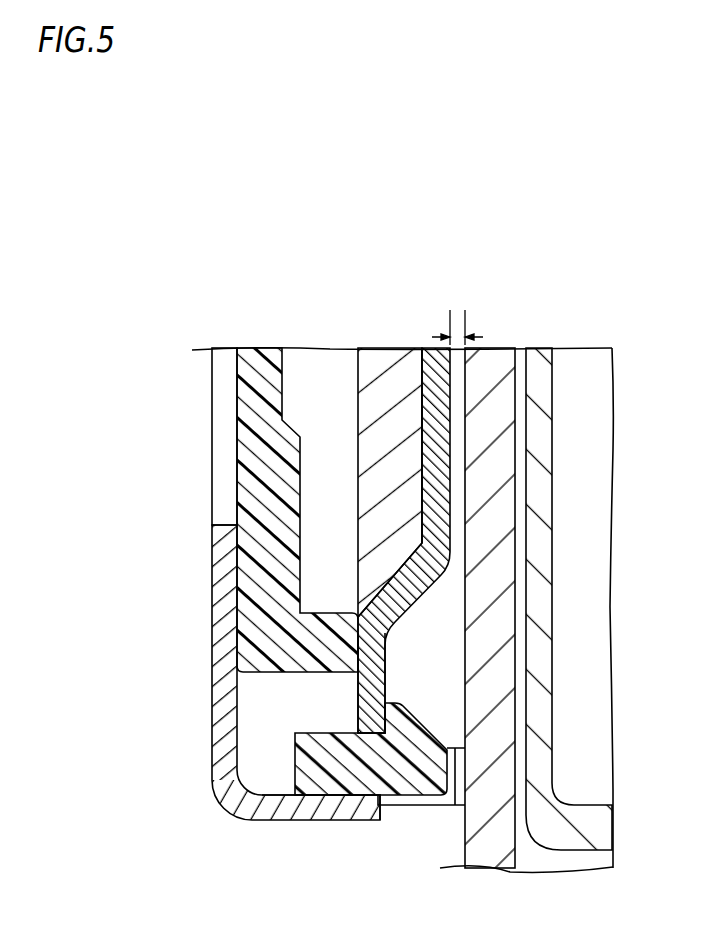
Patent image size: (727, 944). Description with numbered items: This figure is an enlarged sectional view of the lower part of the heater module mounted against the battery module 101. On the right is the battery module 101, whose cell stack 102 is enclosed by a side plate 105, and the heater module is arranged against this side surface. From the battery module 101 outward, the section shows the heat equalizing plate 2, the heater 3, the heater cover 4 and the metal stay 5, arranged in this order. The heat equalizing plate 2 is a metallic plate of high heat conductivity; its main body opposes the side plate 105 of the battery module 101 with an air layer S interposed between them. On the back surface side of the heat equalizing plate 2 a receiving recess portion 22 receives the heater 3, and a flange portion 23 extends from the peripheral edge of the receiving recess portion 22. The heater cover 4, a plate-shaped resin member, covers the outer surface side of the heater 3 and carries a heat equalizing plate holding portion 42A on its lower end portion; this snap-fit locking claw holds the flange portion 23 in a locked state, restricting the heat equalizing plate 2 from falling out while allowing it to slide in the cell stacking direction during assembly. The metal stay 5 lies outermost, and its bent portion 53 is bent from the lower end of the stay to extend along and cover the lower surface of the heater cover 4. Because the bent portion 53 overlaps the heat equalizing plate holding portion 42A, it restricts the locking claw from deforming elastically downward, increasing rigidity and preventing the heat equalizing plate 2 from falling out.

The heat equalizing plate 2 is at (423, 346).
The heater 3 is at (378, 362).
The heater cover 4 is at (240, 433).
The metal stay 5 is at (212, 578).
The receiving recess portion 22 is at (405, 402).
The flange portion 23 is at (357, 697).
The heat equalizing plate holding portion 42A is at (293, 757).
The bent portion 53 is at (333, 822).
The battery module 101 is at (567, 330).
The cell stack 102 is at (566, 838).
The side plate 105 is at (462, 812).
The air layer S is at (457, 317).